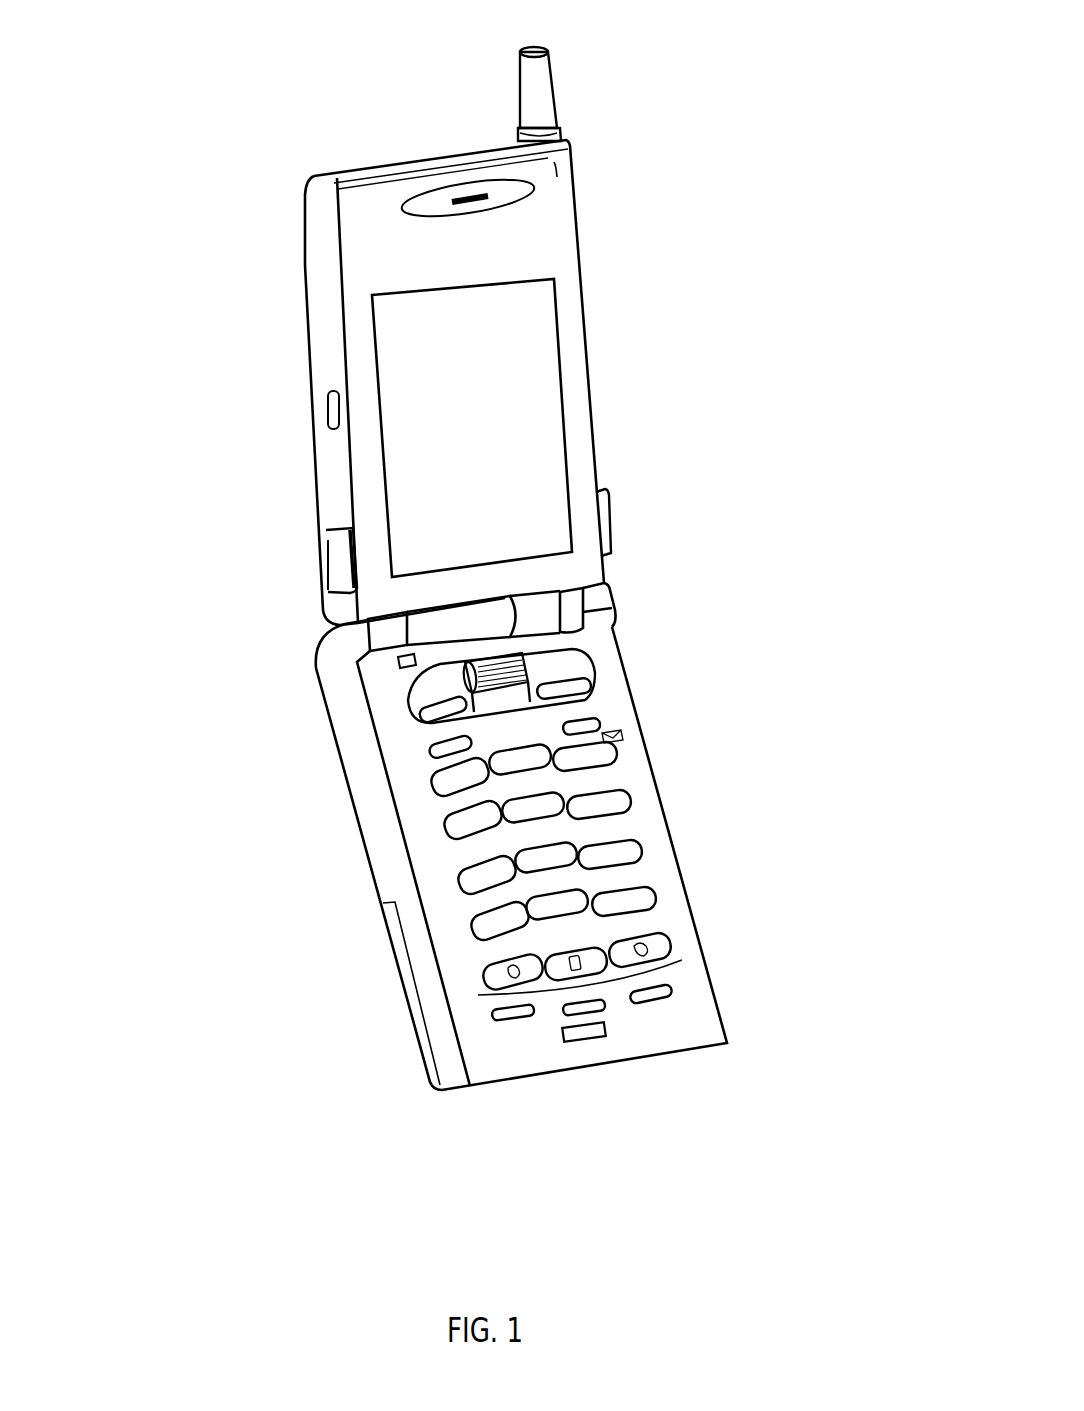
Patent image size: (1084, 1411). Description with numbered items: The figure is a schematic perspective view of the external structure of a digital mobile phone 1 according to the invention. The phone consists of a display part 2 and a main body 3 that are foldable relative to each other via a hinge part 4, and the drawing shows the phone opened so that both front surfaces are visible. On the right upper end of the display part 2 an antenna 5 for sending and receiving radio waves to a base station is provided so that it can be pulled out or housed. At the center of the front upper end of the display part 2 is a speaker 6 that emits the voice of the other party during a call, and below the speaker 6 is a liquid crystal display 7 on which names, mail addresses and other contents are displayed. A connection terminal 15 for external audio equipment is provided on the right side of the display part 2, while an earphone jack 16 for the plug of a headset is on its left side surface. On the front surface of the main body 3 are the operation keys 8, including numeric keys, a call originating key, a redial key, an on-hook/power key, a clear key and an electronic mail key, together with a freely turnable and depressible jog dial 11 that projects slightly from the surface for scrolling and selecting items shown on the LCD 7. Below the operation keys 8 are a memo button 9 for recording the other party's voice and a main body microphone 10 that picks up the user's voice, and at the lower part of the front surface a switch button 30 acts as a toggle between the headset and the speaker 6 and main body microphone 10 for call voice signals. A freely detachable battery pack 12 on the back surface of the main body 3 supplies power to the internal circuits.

The digital mobile phone 1 is at (82, 121).
The display part 2 is at (612, 320).
The main body 3 is at (652, 658).
The hinge part 4 is at (623, 590).
The antenna 5 is at (540, 47).
The speaker 6 is at (533, 185).
The liquid crystal display (LCD) 7 is at (537, 443).
The operation keys 8 is at (647, 702).
The memo button 9 is at (532, 1018).
The main body microphone 10 is at (580, 1032).
The jog dial 11 is at (480, 671).
The battery pack 12 is at (410, 1005).
The connection terminal 15 is at (605, 518).
The earphone jack 16 is at (323, 565).
The switch button 30 is at (657, 1000).